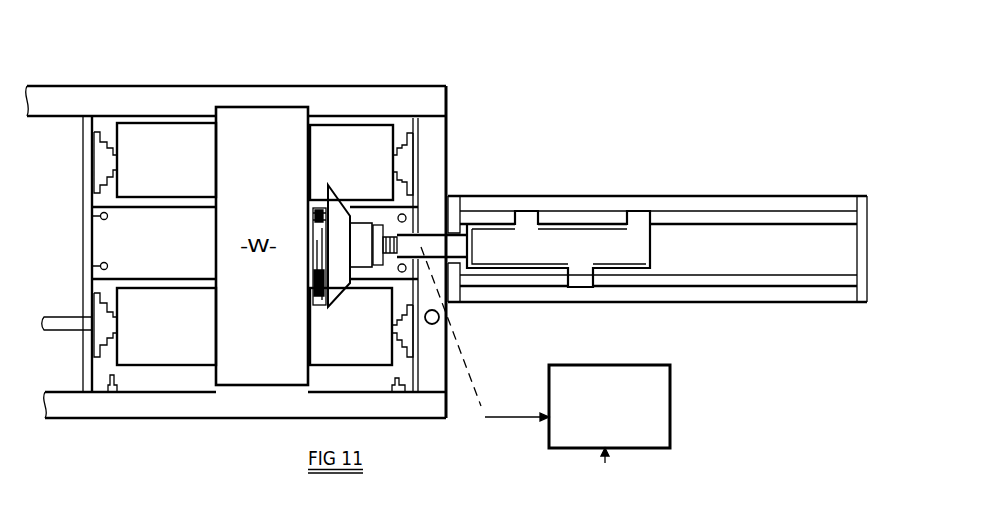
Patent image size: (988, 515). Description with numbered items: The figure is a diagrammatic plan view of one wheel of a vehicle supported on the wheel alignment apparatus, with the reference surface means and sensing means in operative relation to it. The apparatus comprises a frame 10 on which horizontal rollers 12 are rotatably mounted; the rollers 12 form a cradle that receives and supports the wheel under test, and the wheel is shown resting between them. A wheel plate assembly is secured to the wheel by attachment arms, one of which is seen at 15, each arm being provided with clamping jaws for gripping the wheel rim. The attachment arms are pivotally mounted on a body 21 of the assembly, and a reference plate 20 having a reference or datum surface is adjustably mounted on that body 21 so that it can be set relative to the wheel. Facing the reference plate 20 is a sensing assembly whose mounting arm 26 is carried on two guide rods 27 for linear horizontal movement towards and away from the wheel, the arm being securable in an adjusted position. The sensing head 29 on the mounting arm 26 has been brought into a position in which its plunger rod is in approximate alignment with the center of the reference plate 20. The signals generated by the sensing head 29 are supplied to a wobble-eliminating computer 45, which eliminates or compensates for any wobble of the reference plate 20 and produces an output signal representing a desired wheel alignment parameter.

The frame 10 is at (125, 405).
The rollers 12 is at (168, 137).
The attachment arm 15 is at (317, 312).
The reference plate 20 is at (382, 257).
The body 21 is at (361, 258).
The mounting arm 26 is at (563, 247).
The guide rods 27 is at (773, 278).
The sensing head 29 is at (426, 240).
The wobble-eliminating computer 45 is at (673, 380).